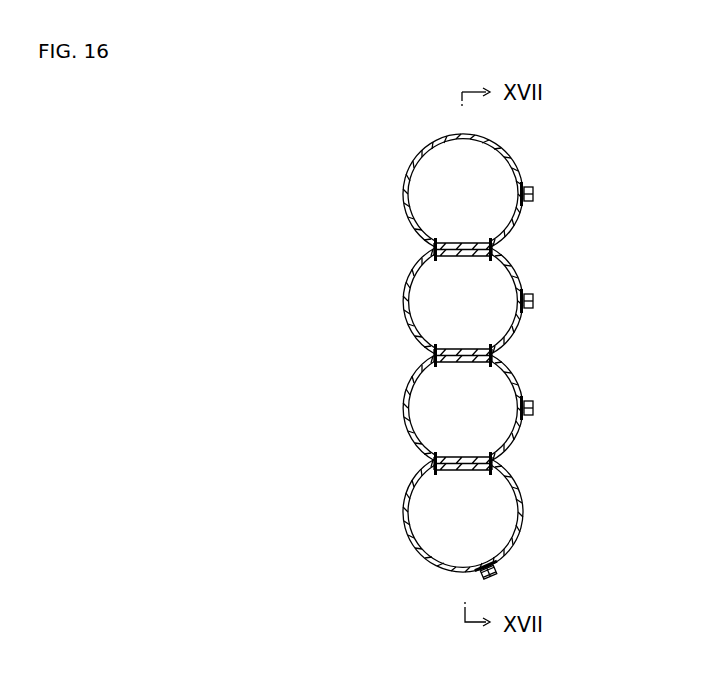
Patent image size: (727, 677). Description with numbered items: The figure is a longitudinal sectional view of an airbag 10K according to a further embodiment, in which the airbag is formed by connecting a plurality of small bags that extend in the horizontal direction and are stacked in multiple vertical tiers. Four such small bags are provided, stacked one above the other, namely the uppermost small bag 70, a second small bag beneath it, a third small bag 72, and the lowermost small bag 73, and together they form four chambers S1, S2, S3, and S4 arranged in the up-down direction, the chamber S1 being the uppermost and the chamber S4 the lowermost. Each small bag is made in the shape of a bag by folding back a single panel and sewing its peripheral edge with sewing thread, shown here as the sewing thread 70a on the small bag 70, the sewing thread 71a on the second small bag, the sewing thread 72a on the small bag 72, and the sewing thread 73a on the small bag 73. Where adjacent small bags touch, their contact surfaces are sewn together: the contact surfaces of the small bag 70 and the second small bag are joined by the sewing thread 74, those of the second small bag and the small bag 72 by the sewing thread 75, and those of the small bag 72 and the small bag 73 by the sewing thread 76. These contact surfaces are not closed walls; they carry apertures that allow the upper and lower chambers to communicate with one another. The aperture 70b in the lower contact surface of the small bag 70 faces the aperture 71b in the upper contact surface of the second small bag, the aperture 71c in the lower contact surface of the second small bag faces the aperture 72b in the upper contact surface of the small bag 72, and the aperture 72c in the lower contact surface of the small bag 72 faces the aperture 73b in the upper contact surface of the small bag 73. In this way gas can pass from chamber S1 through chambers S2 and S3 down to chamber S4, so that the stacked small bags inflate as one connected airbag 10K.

The airbag 10K is at (330, 196).
The small bag 70 is at (418, 160).
The sewing thread 70a is at (532, 189).
The aperture 70b is at (462, 243).
The sewing thread 71a is at (532, 295).
The aperture 71b is at (467, 259).
The aperture 71c is at (462, 349).
The small bag 72 is at (405, 398).
The sewing thread 72a is at (532, 403).
The aperture 72b is at (464, 362).
The aperture 72c is at (462, 457).
The small bag 73 is at (403, 512).
The sewing thread 73a is at (500, 574).
The aperture 73b is at (464, 471).
The sewing thread 74 is at (436, 260).
The sewing thread 75 is at (436, 368).
The sewing thread 76 is at (437, 476).
The chamber S1 is at (430, 197).
The chamber S2 is at (425, 320).
The chamber S3 is at (425, 437).
The chamber S4 is at (417, 530).